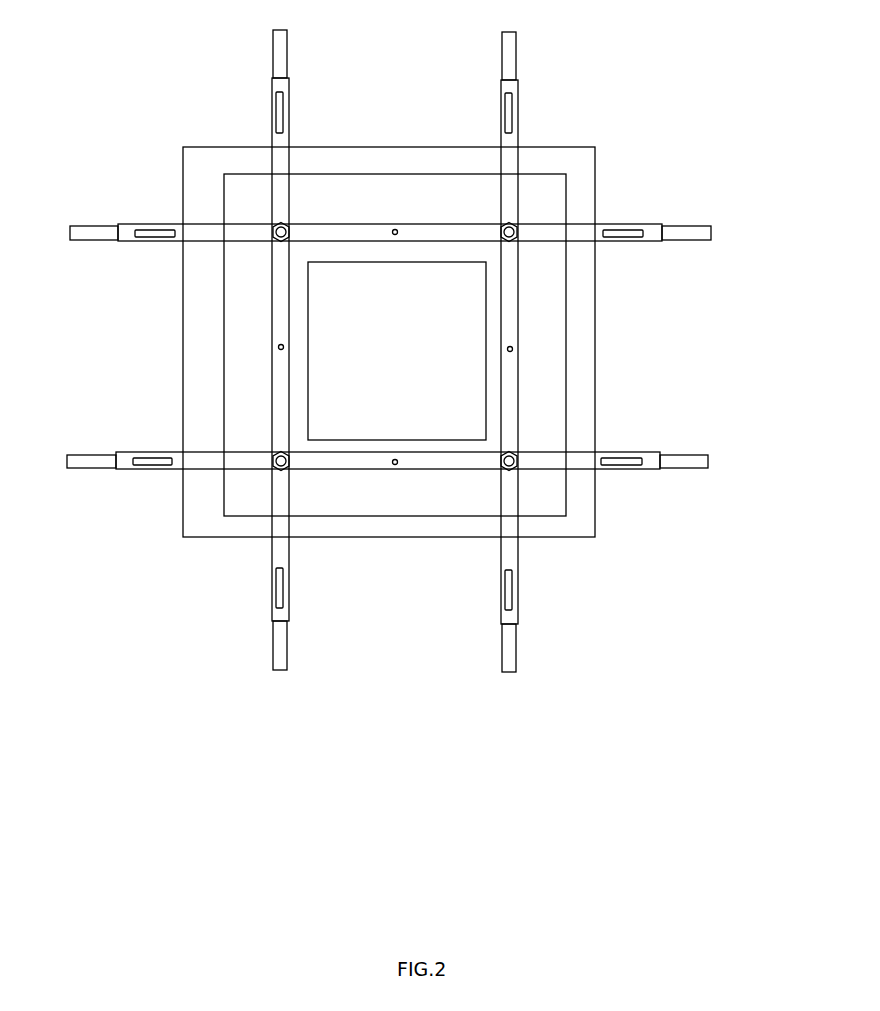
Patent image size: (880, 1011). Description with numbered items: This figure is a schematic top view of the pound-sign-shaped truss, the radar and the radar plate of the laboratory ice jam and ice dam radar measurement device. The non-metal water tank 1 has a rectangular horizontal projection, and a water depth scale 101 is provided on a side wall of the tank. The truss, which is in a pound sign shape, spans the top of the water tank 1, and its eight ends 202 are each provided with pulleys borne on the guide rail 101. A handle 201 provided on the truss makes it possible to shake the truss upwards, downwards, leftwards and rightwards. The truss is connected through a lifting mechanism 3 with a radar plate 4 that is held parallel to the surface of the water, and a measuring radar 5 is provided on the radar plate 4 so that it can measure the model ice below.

The water tank 1 is at (586, 503).
The water depth scale 101 is at (510, 652).
The handle 201 is at (512, 105).
The ends 202 is at (648, 462).
The lifting mechanism 3 is at (527, 218).
The radar plate 4 is at (494, 384).
The measuring radar 5 is at (478, 317).